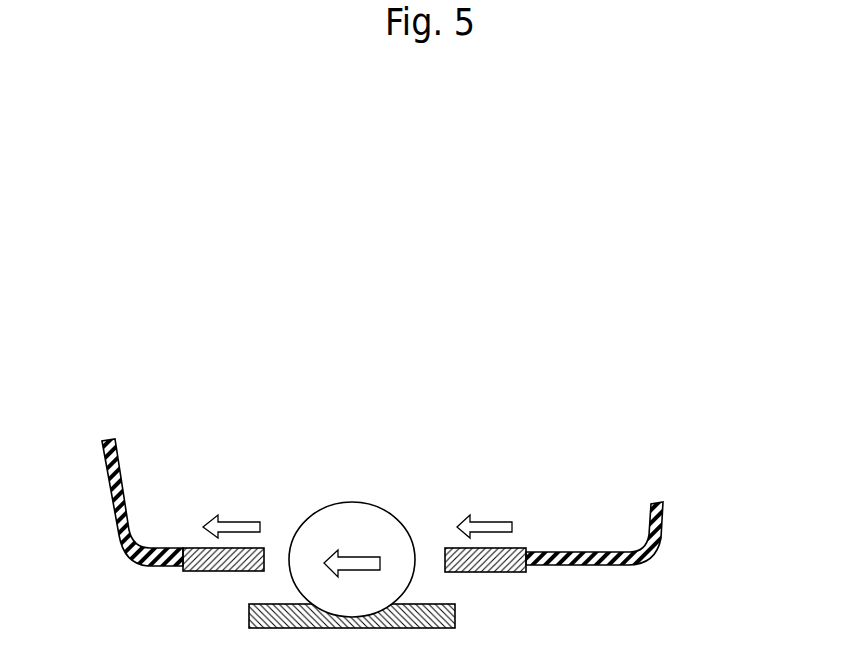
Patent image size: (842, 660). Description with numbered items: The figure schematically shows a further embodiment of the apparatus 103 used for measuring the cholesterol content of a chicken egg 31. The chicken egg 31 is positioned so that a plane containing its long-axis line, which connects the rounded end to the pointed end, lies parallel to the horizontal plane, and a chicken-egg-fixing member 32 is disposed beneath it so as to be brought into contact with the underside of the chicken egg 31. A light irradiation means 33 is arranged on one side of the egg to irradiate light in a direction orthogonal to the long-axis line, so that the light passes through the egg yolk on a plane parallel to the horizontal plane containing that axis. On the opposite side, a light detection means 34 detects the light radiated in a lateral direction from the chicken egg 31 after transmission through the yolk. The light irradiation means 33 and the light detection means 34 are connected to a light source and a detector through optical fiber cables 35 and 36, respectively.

The apparatus 103 is at (695, 411).
The chicken egg 31 is at (388, 505).
The chicken-egg-fixing member 32 is at (456, 614).
The light irradiation means 33 is at (517, 548).
The light detection means 34 is at (220, 572).
The optical fiber cable 35 is at (661, 529).
The optical fiber cable 36 is at (110, 503).